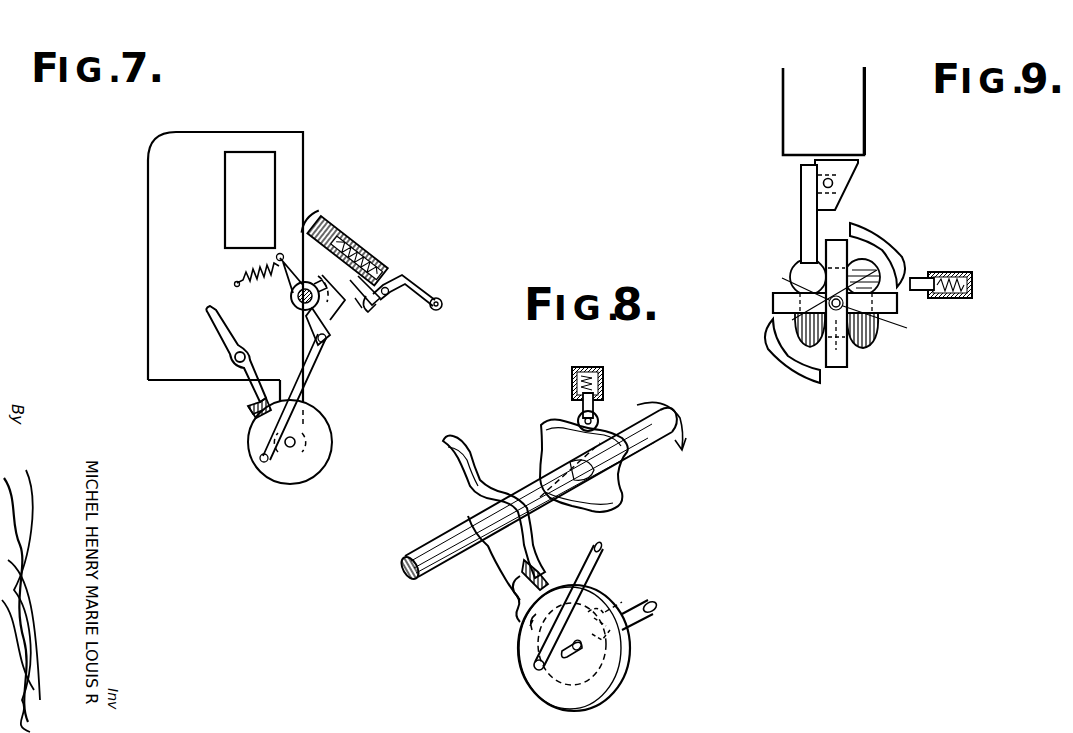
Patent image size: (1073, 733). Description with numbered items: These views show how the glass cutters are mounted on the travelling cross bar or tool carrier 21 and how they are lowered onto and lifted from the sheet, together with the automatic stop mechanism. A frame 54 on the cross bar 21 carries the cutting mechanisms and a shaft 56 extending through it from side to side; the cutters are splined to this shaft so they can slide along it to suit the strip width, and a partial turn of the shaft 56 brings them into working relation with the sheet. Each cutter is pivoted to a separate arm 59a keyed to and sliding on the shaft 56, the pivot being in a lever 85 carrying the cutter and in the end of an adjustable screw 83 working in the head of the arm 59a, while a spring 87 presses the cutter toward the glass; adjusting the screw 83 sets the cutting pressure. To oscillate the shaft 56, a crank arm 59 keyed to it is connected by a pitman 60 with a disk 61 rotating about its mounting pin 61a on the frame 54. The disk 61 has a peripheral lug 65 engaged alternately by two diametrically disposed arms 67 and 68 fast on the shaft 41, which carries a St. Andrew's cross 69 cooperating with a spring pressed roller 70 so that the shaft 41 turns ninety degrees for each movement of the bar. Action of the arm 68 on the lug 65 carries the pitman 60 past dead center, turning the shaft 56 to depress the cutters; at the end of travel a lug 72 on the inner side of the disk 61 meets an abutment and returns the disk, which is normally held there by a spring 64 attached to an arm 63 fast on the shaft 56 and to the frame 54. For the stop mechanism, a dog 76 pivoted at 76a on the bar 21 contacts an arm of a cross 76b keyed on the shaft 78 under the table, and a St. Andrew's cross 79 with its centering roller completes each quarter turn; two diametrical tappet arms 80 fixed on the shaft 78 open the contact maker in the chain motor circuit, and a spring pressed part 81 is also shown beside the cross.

In FIG. 7, the cross bar or tool carrier 21 is at (276, 170).
In FIG. 9, the cross bar or tool carrier 21 is at (788, 122).
In FIG. 7, the shaft 41 is at (234, 358).
In FIG. 8, the shaft 41 is at (424, 552).
In FIG. 7, the frame 54 is at (155, 249).
In FIG. 7, the shaft 56 is at (298, 299).
In FIG. 7, the crank arm 59 is at (328, 333).
In FIG. 7, the arm 59a is at (367, 263).
In FIG. 7, the pitman 60 is at (316, 358).
In FIG. 8, the pitman 60 is at (605, 549).
In FIG. 7, the disk 61 is at (338, 434).
In FIG. 8, the disk 61 is at (523, 648).
In FIG. 7, the mounting pin 61a is at (292, 448).
In FIG. 8, the mounting pin 61a is at (641, 612).
In FIG. 7, the arm 63 is at (290, 275).
In FIG. 7, the spring 64 is at (240, 280).
In FIG. 7, the peripheral lug 65 is at (254, 412).
In FIG. 8, the peripheral lug 65 is at (516, 581).
In FIG. 7, the arm 67 is at (216, 321).
In FIG. 8, the arm 67 is at (466, 456).
In FIG. 7, the arm 68 is at (254, 386).
In FIG. 8, the arm 68 is at (541, 568).
In FIG. 8, the St. Andrew's cross 69 is at (622, 484).
In FIG. 8, the spring pressed roller 70 is at (598, 416).
In FIG. 8, the lug 72 is at (602, 604).
In FIG. 9, the dog 76 is at (802, 216).
In FIG. 9, the pivot 76a is at (834, 183).
In FIG. 9, the cross 76b is at (923, 330).
In FIG. 9, the shaft 78 is at (827, 303).
In FIG. 9, the St. Andrew's cross 79 is at (877, 342).
In FIG. 9, the tappet arms 80 is at (897, 247).
In FIG. 9, the spring plunger 81 is at (923, 297).
In FIG. 7, the adjustable screw 83 is at (335, 262).
In FIG. 7, the lever 85 is at (392, 296).
In FIG. 7, the spring 87 is at (362, 305).